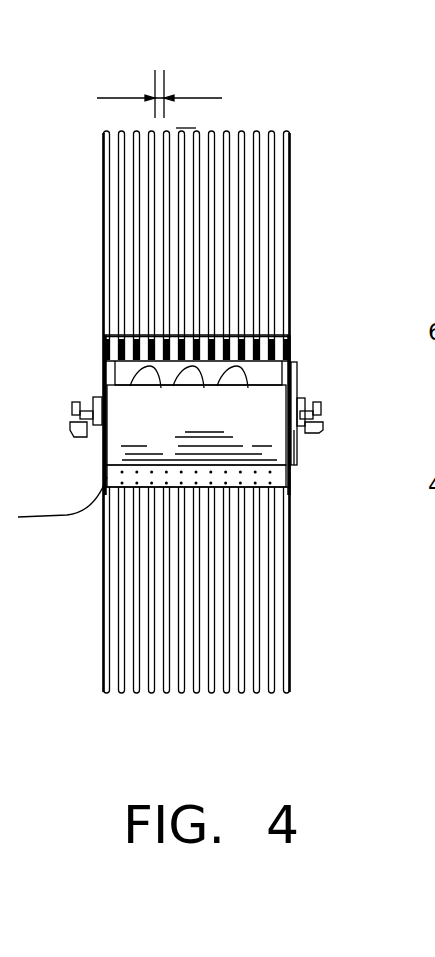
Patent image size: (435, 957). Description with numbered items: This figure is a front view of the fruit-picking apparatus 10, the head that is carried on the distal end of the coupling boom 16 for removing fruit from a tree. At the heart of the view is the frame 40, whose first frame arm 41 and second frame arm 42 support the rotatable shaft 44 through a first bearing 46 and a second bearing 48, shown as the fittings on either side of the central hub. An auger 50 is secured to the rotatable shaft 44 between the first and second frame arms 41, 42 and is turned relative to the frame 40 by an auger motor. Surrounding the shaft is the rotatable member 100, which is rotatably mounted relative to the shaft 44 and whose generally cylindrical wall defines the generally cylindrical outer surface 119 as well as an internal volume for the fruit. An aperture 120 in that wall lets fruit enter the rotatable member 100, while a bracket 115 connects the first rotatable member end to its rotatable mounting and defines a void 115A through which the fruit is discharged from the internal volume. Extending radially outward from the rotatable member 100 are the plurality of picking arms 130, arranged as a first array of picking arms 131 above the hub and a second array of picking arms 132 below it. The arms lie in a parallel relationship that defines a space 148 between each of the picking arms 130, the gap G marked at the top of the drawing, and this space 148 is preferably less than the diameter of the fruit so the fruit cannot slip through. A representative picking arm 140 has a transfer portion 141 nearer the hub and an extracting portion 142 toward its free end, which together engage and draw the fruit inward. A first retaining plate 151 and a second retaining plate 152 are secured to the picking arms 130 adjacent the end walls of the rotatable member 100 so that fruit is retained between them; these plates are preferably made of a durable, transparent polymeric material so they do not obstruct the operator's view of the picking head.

The apparatus 10 is at (226, 78).
The picking arms 130 is at (330, 80).
The space 148 is at (107, 132).
The second retaining plate 152 is at (103, 222).
The extracting portion 142 is at (274, 157).
The first array of picking arms 131 is at (253, 212).
The picking arm 140 is at (291, 140).
The first retaining plate 151 is at (288, 252).
The transfer portion 141 is at (245, 300).
The gap between fins G is at (159, 75).
The coupling boom 16 is at (104, 361).
The auger 50 is at (290, 337).
The aperture 120 is at (296, 352).
The bracket 115 is at (299, 387).
The void 115A is at (296, 460).
The rotatable member 100 is at (133, 433).
The outer surface 119 is at (289, 517).
The rotatable shaft 44 is at (88, 408).
The second bearing 48 is at (68, 418).
The second frame arm 42 is at (87, 440).
The first bearing 46 is at (323, 402).
The frame 40 is at (322, 432).
The first frame arm 41 is at (312, 441).
The second array of picking arms 132 is at (247, 597).